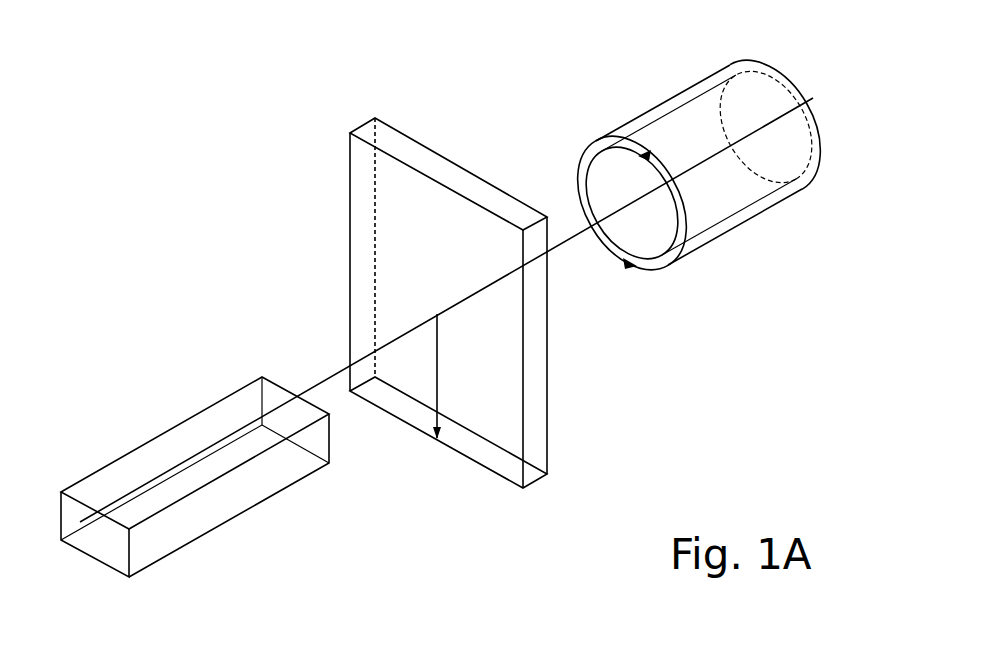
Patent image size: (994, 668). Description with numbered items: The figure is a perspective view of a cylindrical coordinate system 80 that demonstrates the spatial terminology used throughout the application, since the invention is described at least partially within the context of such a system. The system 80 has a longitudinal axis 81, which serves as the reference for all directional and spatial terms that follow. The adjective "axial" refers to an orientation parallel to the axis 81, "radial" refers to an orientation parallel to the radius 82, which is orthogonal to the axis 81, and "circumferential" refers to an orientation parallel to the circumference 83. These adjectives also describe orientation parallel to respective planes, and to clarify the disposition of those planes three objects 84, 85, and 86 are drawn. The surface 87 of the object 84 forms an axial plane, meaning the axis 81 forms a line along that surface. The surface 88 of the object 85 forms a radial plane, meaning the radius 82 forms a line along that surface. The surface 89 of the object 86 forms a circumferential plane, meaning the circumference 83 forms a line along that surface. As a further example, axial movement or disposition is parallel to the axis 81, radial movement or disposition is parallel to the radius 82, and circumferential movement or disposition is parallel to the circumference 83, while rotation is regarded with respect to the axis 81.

The cylindrical coordinate system 80 is at (305, 179).
The longitudinal axis 81 is at (808, 98).
The radius 82 is at (437, 370).
The circumference 83 is at (572, 160).
The object 84 is at (157, 563).
The object 85 is at (558, 481).
The object 86 is at (727, 237).
The surface 87 is at (150, 457).
The surface 88 is at (365, 260).
The surface 89 is at (660, 100).